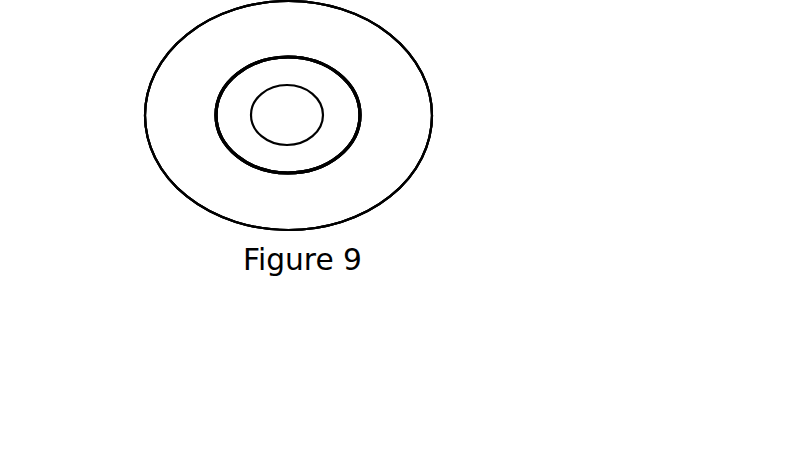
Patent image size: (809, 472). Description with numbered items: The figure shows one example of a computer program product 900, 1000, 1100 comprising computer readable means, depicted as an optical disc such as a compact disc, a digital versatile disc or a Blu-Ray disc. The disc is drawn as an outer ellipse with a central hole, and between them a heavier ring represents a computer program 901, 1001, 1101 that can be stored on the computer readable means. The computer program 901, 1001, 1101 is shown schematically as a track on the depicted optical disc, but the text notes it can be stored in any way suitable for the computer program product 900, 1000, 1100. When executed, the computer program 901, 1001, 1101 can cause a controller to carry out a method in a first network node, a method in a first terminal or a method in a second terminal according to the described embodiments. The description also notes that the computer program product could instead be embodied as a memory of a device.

The computer program product 900 is at (443, 91).
The computer program product 1000 is at (423, 115).
The computer program product 1100 is at (465, 115).
The computer program 901 is at (344, 155).
The computer program 1001 is at (436, 143).
The computer program 1101 is at (476, 143).